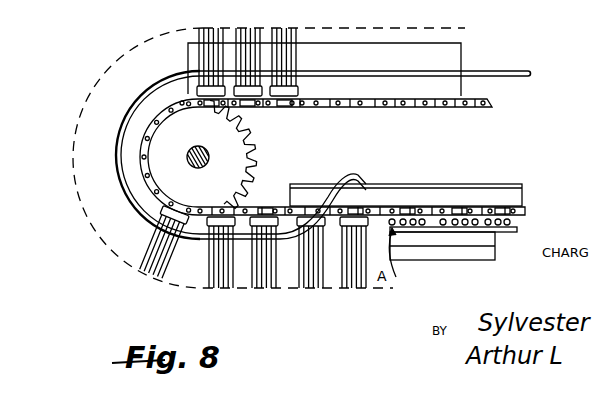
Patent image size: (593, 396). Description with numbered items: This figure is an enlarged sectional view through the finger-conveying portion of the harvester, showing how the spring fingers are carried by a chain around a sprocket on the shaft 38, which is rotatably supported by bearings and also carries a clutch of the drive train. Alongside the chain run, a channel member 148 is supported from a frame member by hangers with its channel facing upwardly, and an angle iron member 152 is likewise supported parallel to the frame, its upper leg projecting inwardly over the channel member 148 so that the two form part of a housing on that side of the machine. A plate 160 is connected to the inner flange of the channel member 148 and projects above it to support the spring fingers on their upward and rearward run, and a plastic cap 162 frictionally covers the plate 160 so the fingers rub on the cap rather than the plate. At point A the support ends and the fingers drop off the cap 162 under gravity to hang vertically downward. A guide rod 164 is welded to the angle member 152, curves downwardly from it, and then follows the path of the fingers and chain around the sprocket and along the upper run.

The shaft 38 is at (205, 139).
The channel member 148 is at (474, 252).
The angle iron member 152 is at (460, 186).
The plate 160 is at (450, 240).
The plastic cap 162 is at (519, 228).
The guide rod 164 is at (154, 83).